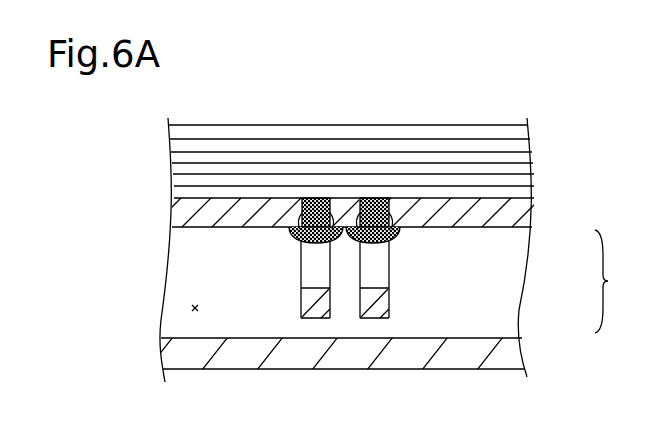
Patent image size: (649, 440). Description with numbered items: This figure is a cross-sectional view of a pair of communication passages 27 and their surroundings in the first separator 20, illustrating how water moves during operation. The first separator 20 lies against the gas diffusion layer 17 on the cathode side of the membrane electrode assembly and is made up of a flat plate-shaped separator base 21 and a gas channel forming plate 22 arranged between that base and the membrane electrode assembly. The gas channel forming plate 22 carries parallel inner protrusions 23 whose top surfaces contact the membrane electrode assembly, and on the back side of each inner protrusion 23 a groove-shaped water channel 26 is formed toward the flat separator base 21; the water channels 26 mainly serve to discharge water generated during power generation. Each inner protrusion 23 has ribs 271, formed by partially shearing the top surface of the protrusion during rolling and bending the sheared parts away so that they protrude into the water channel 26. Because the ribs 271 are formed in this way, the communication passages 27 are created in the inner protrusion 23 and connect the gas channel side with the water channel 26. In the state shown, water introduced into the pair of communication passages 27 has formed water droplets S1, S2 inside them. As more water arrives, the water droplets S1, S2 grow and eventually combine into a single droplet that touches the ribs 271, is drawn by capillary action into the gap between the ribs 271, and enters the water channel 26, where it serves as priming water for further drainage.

The gas diffusion layer 17 is at (528, 157).
The inner protrusion 23 is at (230, 198).
The gas channel forming plate 22 is at (527, 208).
The flat separator base 21 is at (513, 357).
The first separator 20 is at (618, 281).
The communication passage 27 is at (296, 232).
The water droplet S1 is at (304, 241).
The water droplet S2 is at (386, 241).
The rib 271 is at (300, 308).
The water channel 26 is at (195, 312).